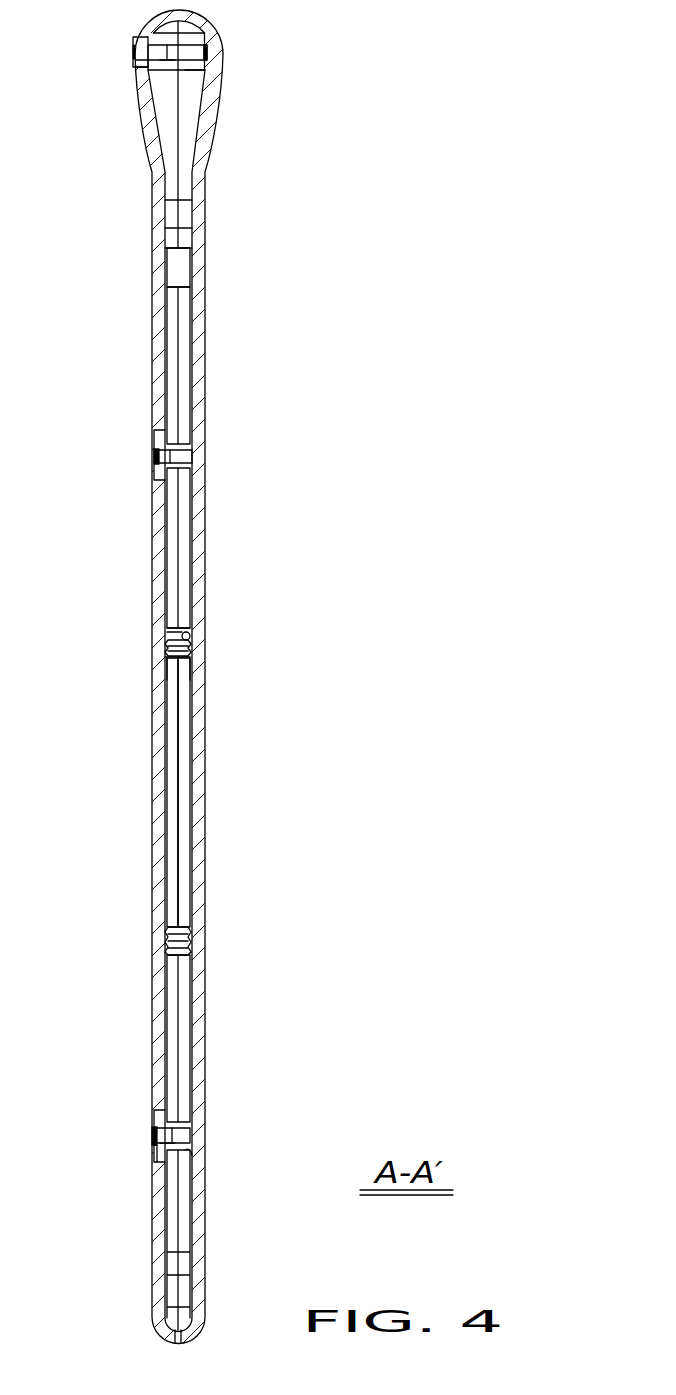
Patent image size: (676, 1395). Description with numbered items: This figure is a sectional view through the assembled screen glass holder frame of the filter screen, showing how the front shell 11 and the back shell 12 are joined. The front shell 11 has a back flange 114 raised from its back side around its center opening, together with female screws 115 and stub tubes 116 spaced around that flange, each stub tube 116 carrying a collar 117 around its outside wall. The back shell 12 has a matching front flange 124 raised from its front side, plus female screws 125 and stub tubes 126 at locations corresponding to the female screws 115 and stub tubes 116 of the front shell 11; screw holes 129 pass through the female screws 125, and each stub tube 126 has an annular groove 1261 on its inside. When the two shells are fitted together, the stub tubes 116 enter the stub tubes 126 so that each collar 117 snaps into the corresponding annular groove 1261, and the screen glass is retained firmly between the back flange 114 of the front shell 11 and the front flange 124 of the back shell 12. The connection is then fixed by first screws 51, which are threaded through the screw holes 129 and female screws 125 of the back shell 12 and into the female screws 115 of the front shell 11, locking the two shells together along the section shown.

The front shell 11 is at (198, 338).
The back shell 12 is at (158, 340).
The first screws 51 is at (136, 44).
The screw holes 129 is at (138, 65).
The female screws 125 is at (166, 63).
The female screws 115 is at (193, 67).
The collar 117 is at (188, 633).
The stub tubes 116 is at (192, 644).
The annular groove 1261 is at (168, 656).
The stub tubes 126 is at (168, 667).
The back flange 114 is at (183, 787).
The front flange 124 is at (170, 833).